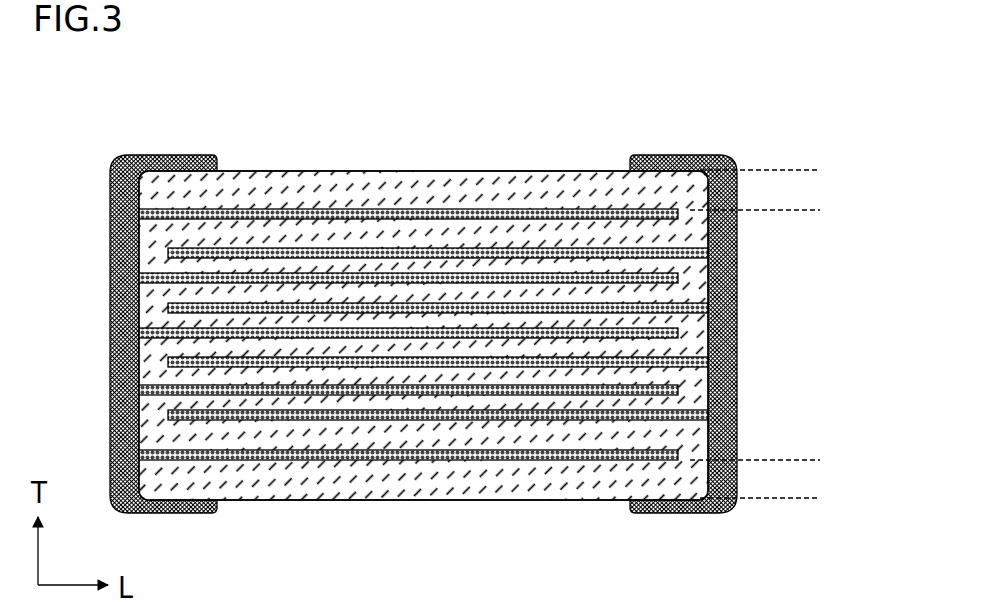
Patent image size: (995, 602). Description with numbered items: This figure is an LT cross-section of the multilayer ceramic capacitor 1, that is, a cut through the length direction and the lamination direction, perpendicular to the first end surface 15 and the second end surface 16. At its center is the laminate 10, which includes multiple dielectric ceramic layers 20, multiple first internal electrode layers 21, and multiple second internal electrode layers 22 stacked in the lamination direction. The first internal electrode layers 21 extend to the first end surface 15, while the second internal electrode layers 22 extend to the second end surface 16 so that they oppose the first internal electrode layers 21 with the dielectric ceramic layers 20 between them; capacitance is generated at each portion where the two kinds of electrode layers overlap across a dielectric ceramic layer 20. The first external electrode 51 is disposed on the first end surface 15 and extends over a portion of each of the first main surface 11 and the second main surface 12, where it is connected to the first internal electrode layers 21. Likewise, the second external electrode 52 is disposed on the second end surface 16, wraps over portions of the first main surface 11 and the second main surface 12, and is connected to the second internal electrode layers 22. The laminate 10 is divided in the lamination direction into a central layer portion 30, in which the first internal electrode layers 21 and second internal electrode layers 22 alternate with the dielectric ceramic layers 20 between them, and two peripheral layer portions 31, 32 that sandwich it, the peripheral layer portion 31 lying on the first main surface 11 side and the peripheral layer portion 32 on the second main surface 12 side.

The multilayer ceramic capacitor 1 is at (84, 107).
The laminate 10 is at (547, 164).
The first main surface 11 is at (255, 170).
The second main surface 12 is at (585, 501).
The first end surface 15 is at (138, 362).
The second end surface 16 is at (709, 388).
The dielectric ceramic layer 20 is at (378, 375).
The first internal electrode layer 21 is at (365, 333).
The second internal electrode layer 22 is at (475, 307).
The central layer portion 30 is at (820, 210).
The peripheral layer portion 31 is at (820, 170).
The peripheral layer portion 32 is at (820, 460).
The first external electrode 51 is at (122, 207).
The second external electrode 52 is at (683, 160).